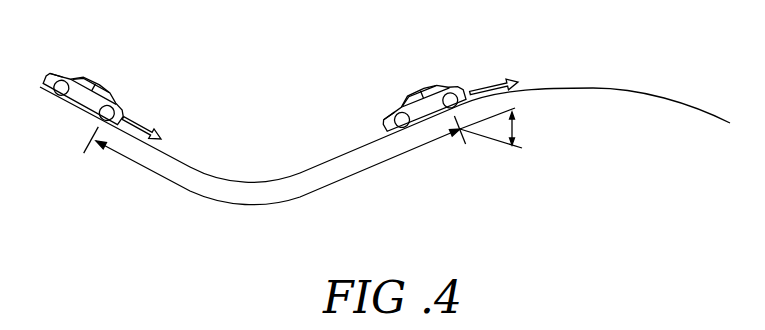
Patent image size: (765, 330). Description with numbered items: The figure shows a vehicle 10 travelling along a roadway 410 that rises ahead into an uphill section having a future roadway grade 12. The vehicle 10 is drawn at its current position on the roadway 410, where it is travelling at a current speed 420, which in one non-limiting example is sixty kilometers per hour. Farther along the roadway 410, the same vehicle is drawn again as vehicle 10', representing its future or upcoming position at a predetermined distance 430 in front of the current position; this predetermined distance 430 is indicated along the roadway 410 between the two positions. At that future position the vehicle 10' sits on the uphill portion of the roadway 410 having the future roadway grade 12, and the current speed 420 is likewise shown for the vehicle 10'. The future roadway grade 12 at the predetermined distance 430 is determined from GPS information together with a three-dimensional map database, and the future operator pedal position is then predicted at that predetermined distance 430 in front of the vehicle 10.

The vehicle 10 is at (98, 74).
The vehicle 10' is at (408, 87).
The future roadway grade 12 is at (517, 132).
The roadway 410 is at (593, 90).
The current speed 420 is at (143, 117).
The predetermined distance 430 is at (307, 192).